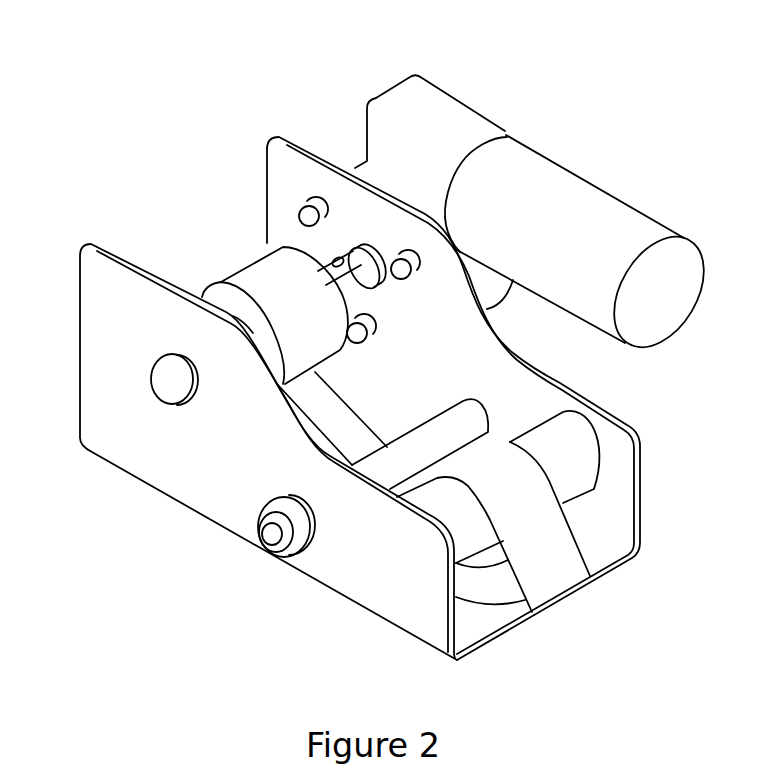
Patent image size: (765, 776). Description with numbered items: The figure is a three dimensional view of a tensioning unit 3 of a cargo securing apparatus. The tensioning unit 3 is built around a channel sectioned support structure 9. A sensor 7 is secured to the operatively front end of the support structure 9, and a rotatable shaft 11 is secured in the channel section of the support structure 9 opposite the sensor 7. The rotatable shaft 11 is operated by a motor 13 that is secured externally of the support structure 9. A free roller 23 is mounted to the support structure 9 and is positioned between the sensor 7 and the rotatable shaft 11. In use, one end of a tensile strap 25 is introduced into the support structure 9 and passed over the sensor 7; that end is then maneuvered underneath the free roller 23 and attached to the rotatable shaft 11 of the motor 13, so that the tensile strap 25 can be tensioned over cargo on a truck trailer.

The tensioning unit 3 is at (108, 138).
The sensor 7 is at (490, 585).
The channel sectioned support structure 9 is at (200, 492).
The rotatable shaft 11 is at (335, 262).
The motor 13 is at (583, 210).
The free roller 23 is at (437, 431).
The tensile strap 25 is at (550, 562).